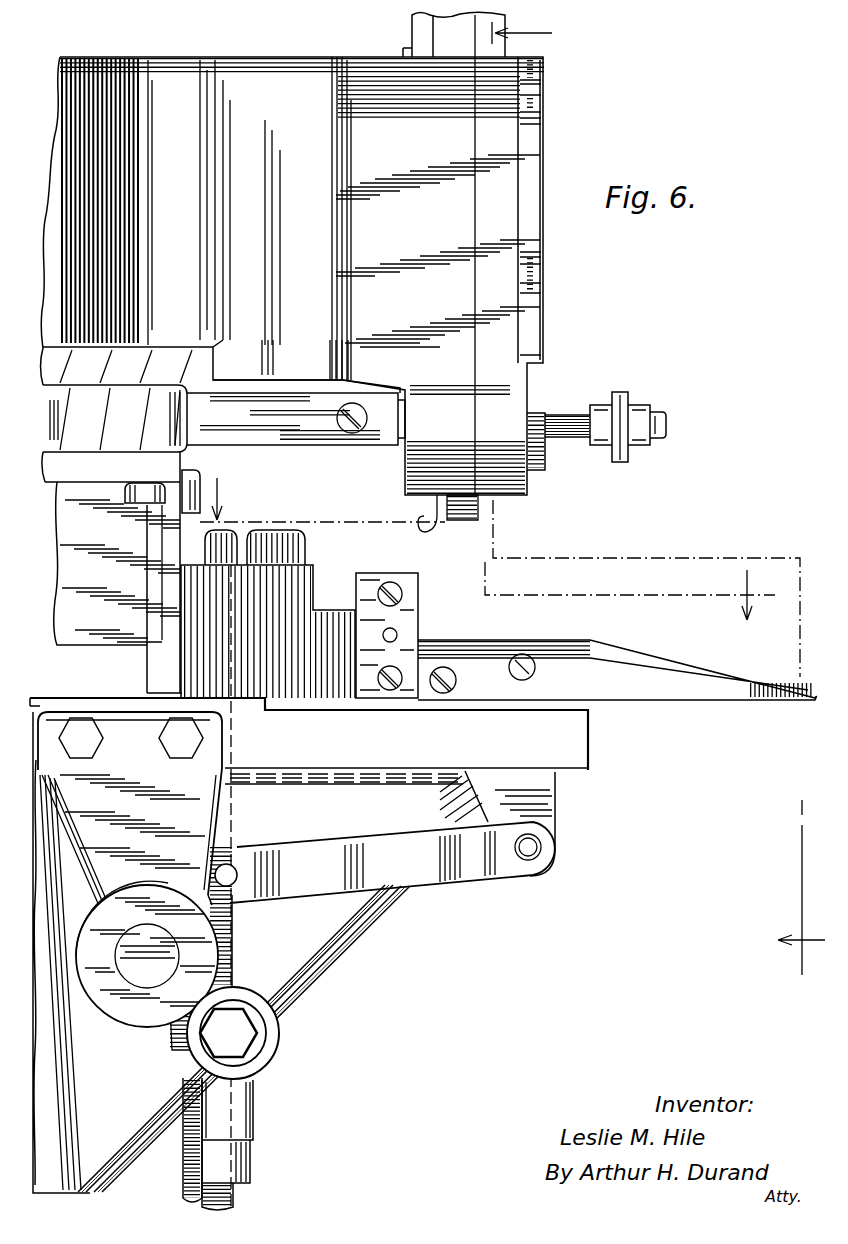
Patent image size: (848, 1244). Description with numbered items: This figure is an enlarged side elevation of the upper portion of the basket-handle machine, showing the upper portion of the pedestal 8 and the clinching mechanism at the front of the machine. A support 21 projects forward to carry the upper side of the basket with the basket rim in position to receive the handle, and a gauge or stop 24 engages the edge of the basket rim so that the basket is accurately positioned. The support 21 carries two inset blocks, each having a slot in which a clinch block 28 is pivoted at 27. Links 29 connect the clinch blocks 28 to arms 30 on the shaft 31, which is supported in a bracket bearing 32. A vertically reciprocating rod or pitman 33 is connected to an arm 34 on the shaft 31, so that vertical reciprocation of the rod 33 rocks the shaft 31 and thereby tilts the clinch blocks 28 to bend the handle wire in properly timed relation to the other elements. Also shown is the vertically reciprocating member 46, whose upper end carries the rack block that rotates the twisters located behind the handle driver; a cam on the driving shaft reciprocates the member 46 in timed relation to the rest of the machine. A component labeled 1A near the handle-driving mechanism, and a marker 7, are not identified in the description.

The clamp body 1A is at (463, 433).
The section line 7- 7 is at (658, 516).
The pedestal 8 is at (500, 843).
The support 21 is at (650, 685).
The gauge or stop 24 is at (403, 617).
The pivot 27 is at (522, 668).
The clinch block 28 is at (540, 802).
The links 29 is at (410, 870).
The arms 30 is at (232, 922).
The shaft 31 is at (145, 975).
The bracket bearing 32 is at (132, 952).
The vertically reciprocating rod or pitman 33 is at (240, 1115).
The arm 34 is at (168, 1030).
The vertically reciprocating member 46 is at (185, 1163).